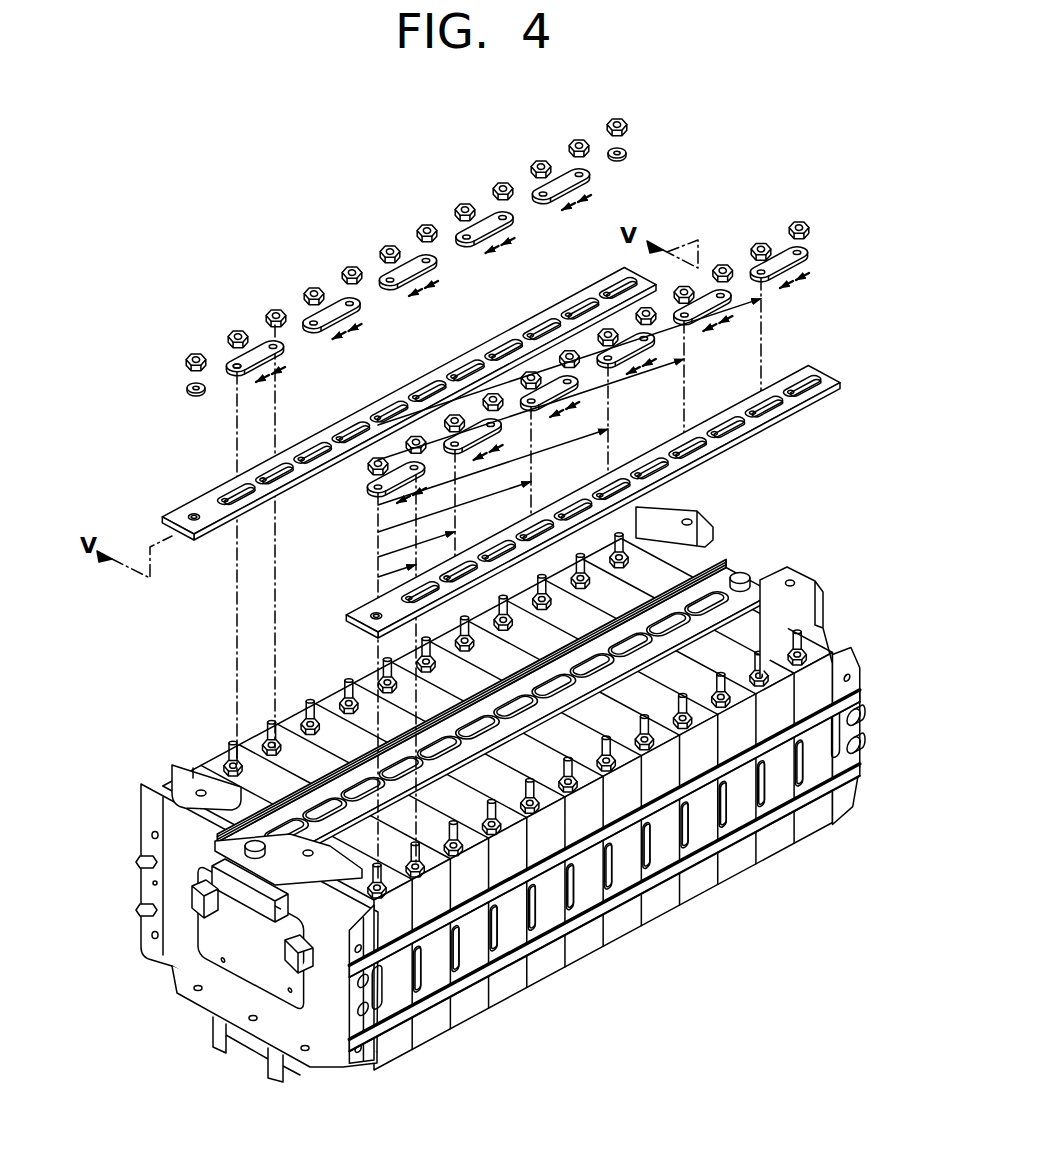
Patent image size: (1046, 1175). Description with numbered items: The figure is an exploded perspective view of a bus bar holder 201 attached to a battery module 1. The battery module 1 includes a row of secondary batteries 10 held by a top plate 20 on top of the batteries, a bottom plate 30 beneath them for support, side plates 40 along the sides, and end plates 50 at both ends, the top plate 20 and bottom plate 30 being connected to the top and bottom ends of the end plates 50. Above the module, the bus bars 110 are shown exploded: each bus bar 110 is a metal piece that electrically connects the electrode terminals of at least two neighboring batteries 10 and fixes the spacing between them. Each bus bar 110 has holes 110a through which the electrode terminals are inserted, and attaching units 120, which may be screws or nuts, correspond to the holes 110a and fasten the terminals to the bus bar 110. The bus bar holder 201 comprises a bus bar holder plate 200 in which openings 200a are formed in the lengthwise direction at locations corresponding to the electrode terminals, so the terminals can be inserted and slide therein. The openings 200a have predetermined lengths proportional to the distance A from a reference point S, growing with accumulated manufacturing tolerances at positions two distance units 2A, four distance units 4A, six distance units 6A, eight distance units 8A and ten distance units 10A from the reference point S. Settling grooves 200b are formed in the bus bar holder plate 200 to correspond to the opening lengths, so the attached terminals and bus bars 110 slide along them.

The battery module 1 is at (789, 527).
The battery 10 is at (500, 990).
The top plate 20 is at (218, 858).
The bottom plate 30 is at (228, 1038).
The side plate 40 is at (438, 980).
The end plate 50 is at (222, 977).
The bus bar 110 is at (255, 357).
The hole 110a is at (232, 365).
The attaching unit 120 is at (236, 333).
The bus bar holder plate 200 is at (322, 472).
The opening 200a is at (356, 430).
The settling groove 200b is at (329, 447).
The bus bar holder 201 is at (678, 162).
The reference point S is at (368, 618).
The distance A is at (407, 563).
The two distance units 2A is at (433, 534).
The four distance units 4A is at (471, 492).
The six distance units 6A is at (510, 450).
The eight distance units 8A is at (548, 397).
The ten distance units 10A is at (593, 351).